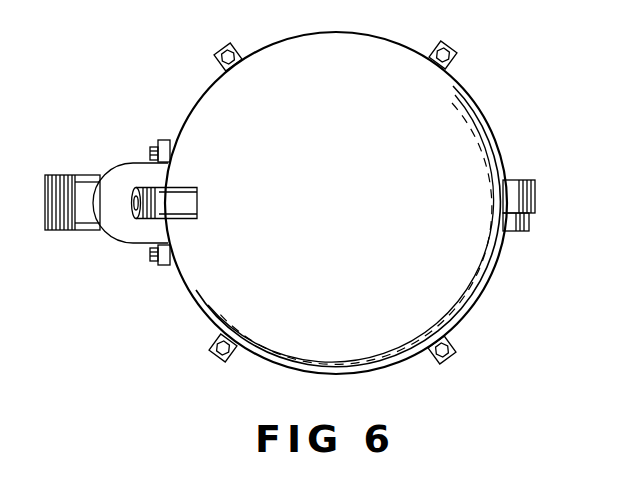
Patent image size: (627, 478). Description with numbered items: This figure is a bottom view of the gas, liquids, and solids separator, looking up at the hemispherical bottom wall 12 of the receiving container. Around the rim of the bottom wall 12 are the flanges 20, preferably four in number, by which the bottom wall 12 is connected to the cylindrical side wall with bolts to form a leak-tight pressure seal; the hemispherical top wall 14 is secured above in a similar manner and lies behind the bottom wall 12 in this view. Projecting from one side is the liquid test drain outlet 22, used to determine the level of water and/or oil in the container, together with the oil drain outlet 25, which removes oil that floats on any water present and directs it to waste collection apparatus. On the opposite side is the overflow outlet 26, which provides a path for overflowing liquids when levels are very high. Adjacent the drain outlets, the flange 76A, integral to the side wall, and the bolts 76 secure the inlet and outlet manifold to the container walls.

The hemispherical bottom wall 12 is at (353, 238).
The flanges 20 is at (235, 45).
The liquid test drain outlet 22 is at (135, 205).
The oil drain outlet 25 is at (45, 219).
The overflow outlet 26 is at (535, 218).
The bolts 76 is at (150, 147).
The flange 76A is at (164, 141).
The hemispherical top wall 14 is at (9, 162).